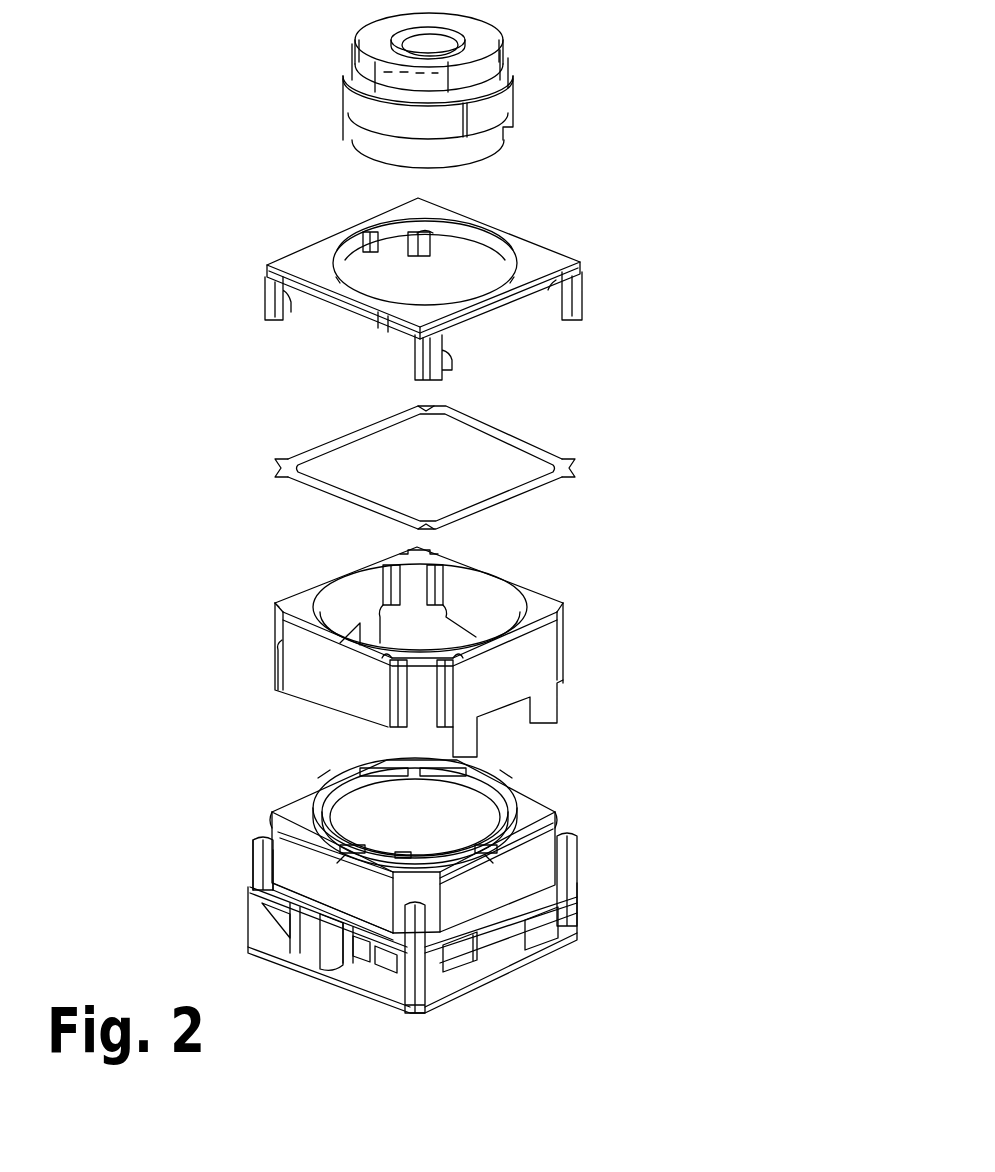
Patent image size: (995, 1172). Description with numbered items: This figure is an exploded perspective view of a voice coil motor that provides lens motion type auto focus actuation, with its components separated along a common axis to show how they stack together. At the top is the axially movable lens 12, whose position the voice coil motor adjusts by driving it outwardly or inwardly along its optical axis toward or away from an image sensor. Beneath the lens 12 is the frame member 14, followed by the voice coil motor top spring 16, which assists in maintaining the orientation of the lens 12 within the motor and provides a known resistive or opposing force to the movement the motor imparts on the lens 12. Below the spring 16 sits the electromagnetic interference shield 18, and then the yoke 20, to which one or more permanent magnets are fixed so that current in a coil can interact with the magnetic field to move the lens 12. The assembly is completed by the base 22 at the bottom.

The lens 12 is at (532, 33).
The frame member 14 is at (584, 248).
The voice coil motor top spring 16 is at (577, 448).
The electromagnetic interference (EMI) shield 18 is at (542, 581).
The yoke 20 is at (528, 870).
The base 22 is at (437, 990).